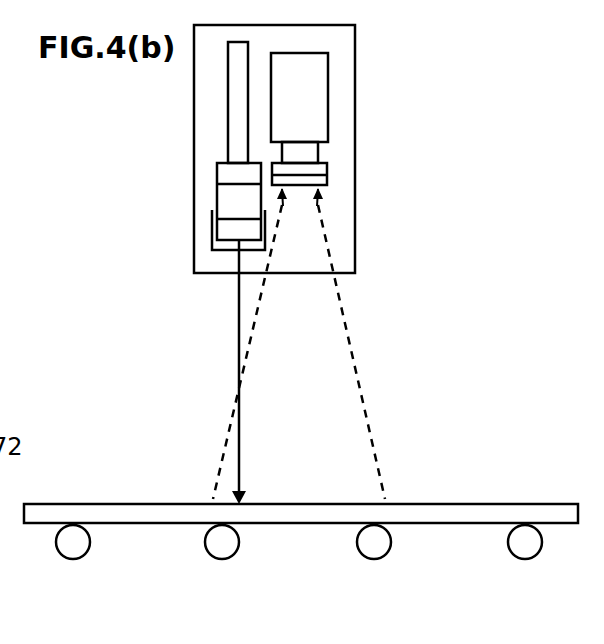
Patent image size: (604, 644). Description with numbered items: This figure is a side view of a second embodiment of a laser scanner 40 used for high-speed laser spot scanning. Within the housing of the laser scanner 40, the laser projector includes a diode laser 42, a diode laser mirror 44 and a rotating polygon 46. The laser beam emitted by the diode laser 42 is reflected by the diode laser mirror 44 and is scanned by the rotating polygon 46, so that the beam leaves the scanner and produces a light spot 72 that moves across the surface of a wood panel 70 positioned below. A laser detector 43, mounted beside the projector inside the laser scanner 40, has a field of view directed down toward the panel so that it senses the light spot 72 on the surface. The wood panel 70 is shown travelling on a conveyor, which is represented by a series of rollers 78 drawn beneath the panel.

The laser scanner 40 is at (355, 52).
The diode laser 42 is at (228, 117).
The laser detector 43 is at (328, 116).
The diode laser mirror 44 is at (212, 233).
The rotating polygon 46 is at (217, 175).
The wood panel 70 is at (148, 512).
The light spot 72 is at (243, 497).
The rollers 78 is at (218, 542).